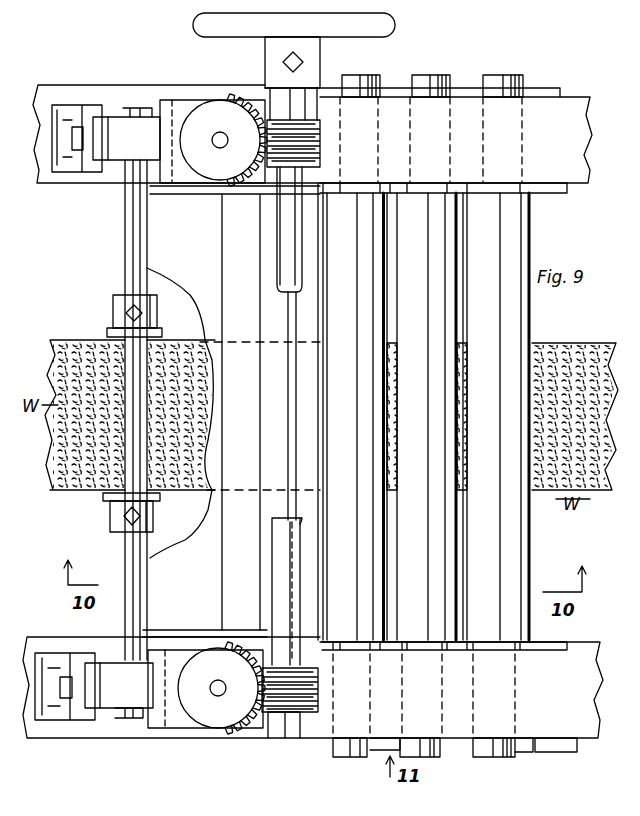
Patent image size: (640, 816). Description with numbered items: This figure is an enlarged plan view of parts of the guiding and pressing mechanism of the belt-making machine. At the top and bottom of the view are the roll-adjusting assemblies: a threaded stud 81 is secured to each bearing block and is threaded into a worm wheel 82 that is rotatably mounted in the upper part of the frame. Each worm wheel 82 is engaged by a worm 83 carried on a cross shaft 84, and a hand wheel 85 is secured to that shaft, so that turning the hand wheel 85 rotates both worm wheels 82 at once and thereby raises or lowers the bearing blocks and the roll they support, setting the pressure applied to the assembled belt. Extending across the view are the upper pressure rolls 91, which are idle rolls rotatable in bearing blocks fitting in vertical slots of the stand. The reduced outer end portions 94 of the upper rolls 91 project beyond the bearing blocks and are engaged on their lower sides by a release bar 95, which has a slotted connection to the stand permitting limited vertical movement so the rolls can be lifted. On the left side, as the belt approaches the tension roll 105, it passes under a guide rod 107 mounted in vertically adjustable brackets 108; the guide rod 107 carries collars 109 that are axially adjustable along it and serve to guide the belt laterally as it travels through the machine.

The threaded stud 81 is at (220, 140).
The worm wheel 82 is at (228, 100).
The worm 83 is at (320, 150).
The cross shaft 84 is at (288, 238).
The hand wheel 85 is at (193, 22).
The upper roll 91 is at (512, 312).
The reduced outer end portion 94 is at (502, 90).
The release bar 95 is at (463, 86).
The tension roll 105 is at (185, 548).
The guide rod 107 is at (125, 270).
The bracket 108 is at (118, 155).
The collar 109 is at (113, 313).